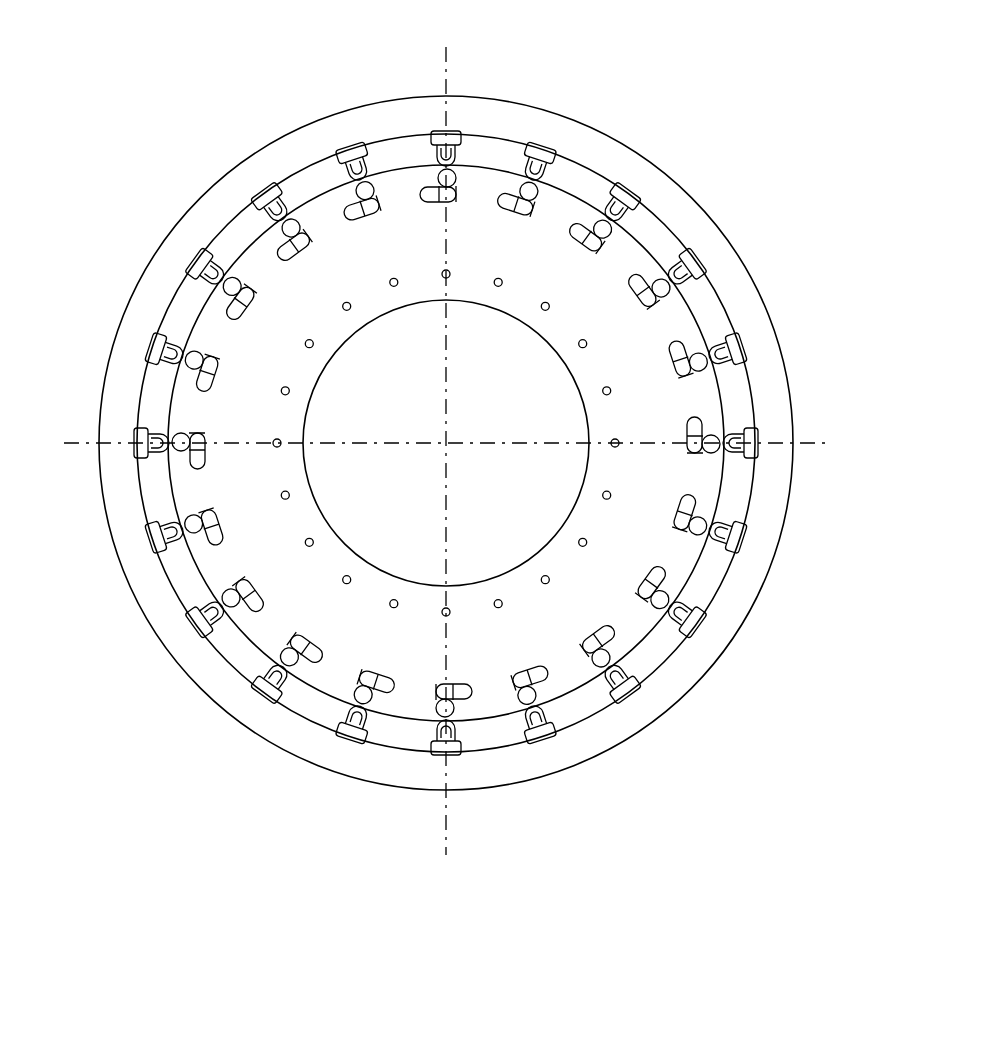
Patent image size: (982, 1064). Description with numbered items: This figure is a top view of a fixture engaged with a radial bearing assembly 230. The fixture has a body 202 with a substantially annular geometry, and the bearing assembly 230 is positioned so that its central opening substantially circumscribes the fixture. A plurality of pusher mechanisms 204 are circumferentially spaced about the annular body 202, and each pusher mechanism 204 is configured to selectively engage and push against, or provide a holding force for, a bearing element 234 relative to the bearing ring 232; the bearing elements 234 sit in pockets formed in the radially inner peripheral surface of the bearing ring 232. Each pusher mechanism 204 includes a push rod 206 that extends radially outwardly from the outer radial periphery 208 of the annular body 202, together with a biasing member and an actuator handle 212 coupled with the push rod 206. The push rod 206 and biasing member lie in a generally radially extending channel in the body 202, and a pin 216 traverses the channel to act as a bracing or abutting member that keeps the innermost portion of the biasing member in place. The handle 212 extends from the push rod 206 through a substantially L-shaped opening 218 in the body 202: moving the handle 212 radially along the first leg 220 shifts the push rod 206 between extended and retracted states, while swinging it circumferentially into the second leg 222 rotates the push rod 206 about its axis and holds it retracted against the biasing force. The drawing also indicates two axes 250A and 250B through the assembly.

The radial bearing assembly 230 is at (307, 83).
The bearing ring 232 is at (637, 148).
The body 202 is at (652, 250).
The outer radial periphery 208 is at (491, 391).
The pin 216 is at (344, 301).
The vertical axis 250A is at (447, 58).
The horizontal axis 250B is at (505, 440).
The bearing element 234 is at (645, 202).
The push rod 206 is at (223, 262).
The pusher mechanism 204 is at (547, 195).
The actuator handle 212 is at (367, 200).
The opening 218 is at (365, 663).
The first leg 220 is at (353, 680).
The second leg 222 is at (380, 697).